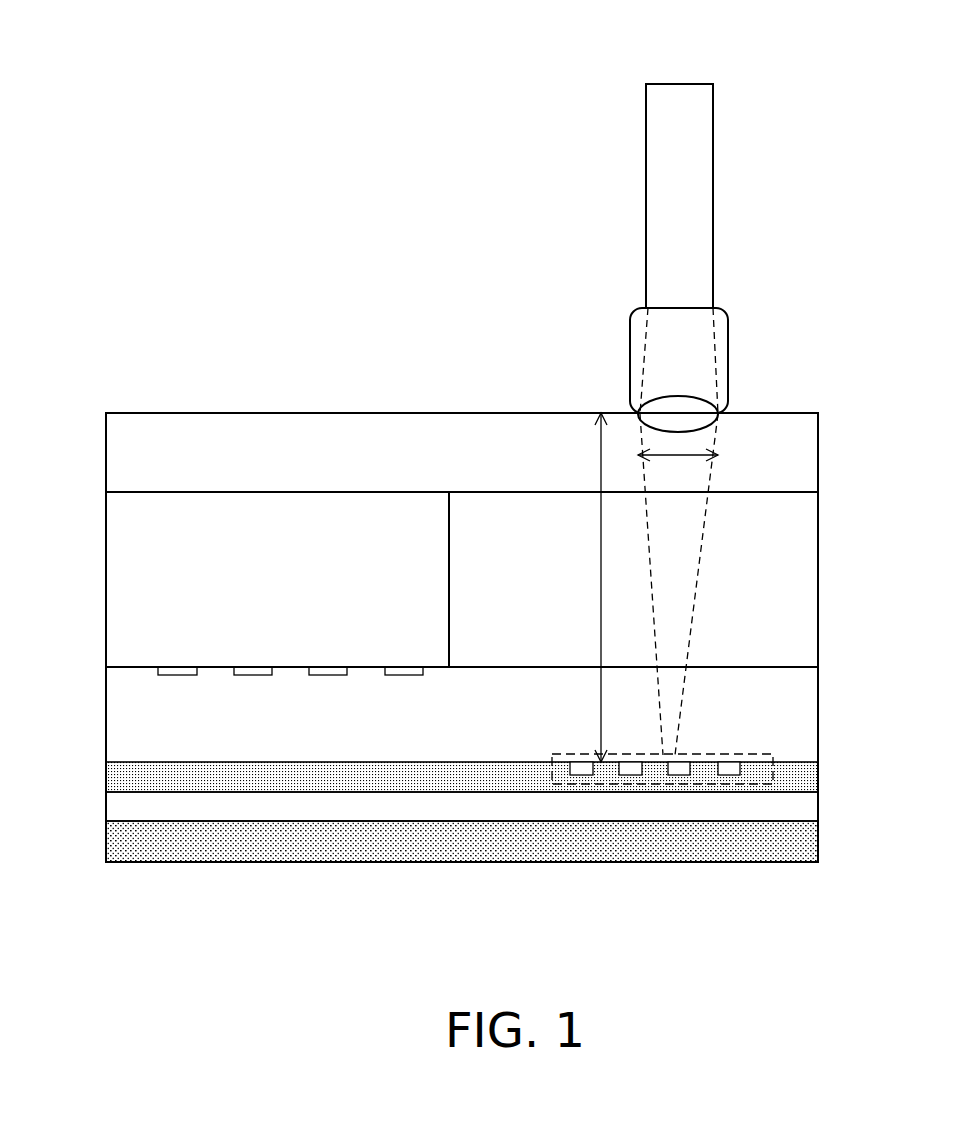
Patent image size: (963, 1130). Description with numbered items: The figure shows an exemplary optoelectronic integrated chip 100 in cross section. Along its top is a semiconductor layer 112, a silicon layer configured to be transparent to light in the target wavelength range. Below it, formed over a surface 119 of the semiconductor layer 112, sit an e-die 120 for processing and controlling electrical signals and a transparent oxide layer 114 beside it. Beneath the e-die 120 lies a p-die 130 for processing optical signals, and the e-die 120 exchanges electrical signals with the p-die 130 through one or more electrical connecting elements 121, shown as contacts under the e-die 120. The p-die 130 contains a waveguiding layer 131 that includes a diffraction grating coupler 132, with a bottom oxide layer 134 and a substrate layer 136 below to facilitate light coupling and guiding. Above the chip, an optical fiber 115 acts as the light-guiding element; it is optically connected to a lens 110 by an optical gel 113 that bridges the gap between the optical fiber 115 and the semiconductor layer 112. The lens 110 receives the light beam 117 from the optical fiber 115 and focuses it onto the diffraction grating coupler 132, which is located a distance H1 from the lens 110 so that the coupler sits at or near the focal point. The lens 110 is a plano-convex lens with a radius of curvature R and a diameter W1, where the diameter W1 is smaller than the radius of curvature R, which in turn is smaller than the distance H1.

The optoelectronic integrated chip 100 is at (484, 36).
The lens 110 is at (680, 397).
The semiconductor layer 112 is at (115, 452).
The optical gel 113 is at (728, 327).
The oxide layer 114 is at (805, 592).
The optical fiber 115 is at (663, 186).
The light beam 117 is at (632, 334).
The surface 119 is at (134, 494).
The e-die 120 is at (115, 588).
The electrical connecting elements 121 is at (250, 668).
The p-die 130 is at (805, 730).
The waveguiding layer 131 is at (380, 765).
The diffraction grating coupler 132 is at (570, 793).
The bottom oxide layer 134 is at (240, 808).
The substrate layer 136 is at (673, 850).
The radius of curvature R is at (647, 405).
The distance H1 is at (586, 587).
The diameter W1 is at (678, 472).